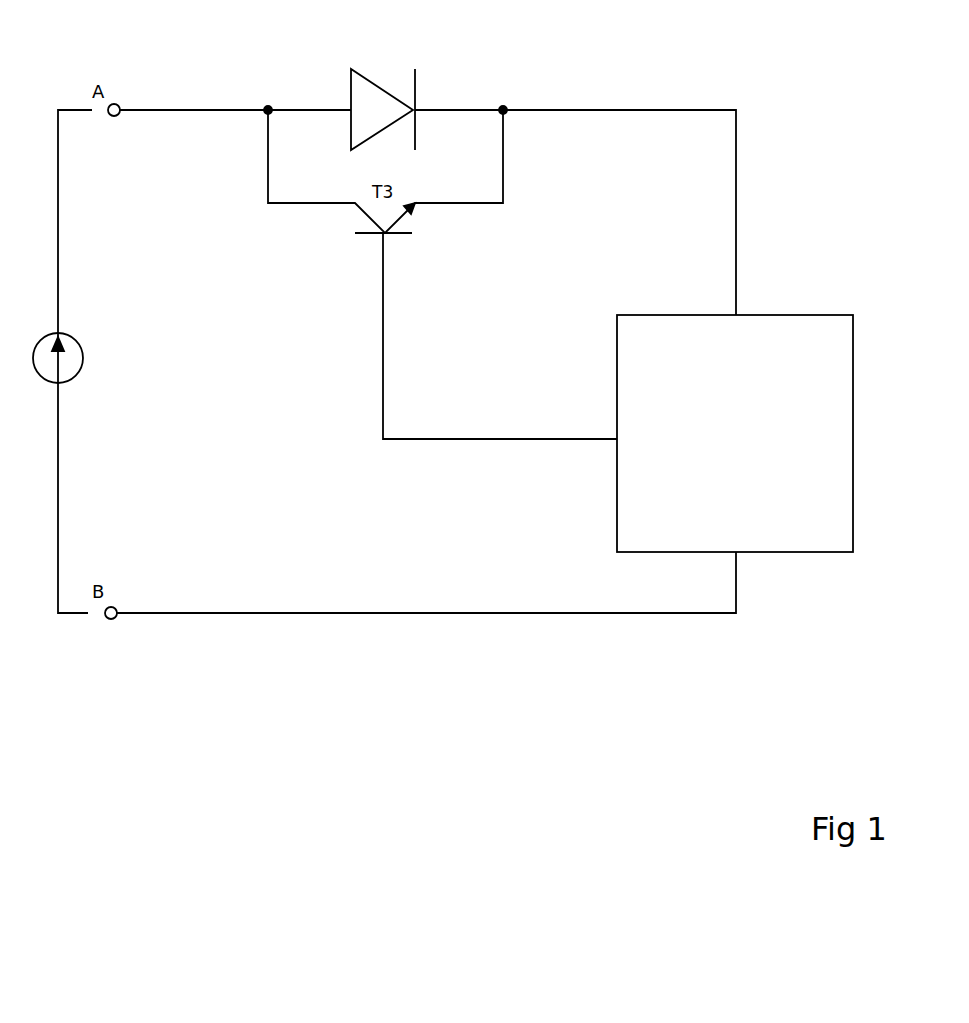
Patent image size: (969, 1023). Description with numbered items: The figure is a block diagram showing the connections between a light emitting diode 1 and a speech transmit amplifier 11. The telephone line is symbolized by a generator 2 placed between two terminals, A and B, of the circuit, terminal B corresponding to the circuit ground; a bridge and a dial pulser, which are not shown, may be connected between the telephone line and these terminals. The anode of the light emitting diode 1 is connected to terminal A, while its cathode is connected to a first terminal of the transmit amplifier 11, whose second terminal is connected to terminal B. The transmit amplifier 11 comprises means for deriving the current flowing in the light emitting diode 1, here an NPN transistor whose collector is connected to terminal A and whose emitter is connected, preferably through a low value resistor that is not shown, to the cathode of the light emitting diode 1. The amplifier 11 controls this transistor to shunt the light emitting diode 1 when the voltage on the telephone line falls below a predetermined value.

The LED 1 is at (378, 83).
The generator 2 is at (77, 336).
The transmit amplifier 11 is at (853, 401).